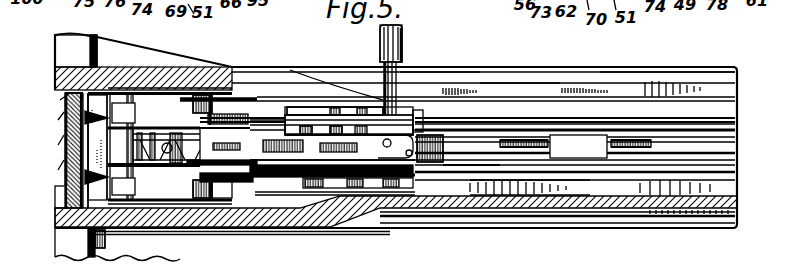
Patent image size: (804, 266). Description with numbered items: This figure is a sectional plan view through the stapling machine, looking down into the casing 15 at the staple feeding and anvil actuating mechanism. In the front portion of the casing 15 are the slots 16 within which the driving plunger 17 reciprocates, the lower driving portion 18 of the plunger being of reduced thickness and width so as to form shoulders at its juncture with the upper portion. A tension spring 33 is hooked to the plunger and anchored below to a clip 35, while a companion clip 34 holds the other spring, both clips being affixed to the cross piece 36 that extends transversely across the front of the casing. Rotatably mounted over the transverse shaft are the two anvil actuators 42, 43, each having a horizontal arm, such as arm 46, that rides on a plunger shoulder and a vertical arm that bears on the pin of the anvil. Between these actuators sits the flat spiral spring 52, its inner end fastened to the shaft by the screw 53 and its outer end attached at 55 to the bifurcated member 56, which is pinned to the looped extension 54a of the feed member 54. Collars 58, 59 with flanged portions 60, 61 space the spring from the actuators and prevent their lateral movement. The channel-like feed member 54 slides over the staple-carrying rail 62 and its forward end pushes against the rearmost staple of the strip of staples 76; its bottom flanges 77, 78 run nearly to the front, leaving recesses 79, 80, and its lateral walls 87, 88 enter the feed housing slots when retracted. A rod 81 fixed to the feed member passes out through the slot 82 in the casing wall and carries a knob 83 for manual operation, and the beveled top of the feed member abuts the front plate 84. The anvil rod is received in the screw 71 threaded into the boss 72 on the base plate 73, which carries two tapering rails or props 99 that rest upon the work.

The casing 15 is at (76, 57).
The slots 16 is at (58, 198).
The driving plunger 17 is at (58, 195).
The bottom or driving portion 18 is at (110, 172).
The tension spring 33 is at (92, 112).
The clip 34 is at (57, 210).
The clip 35 is at (84, 121).
The cross piece 36 is at (90, 146).
The anvil actuator 42 is at (197, 190).
The anvil actuator 43 is at (182, 100).
The arm 46 is at (122, 95).
The flat spiral spring 52 is at (228, 180).
The screw 53 is at (218, 110).
The push or feed member 54 is at (325, 180).
The looped extension 54a is at (440, 175).
The attachment point 55 is at (423, 128).
The member 56 is at (425, 165).
The collar 58 is at (108, 230).
The collar 59 is at (214, 95).
The flanged portion 60 is at (226, 192).
The flanged portion 61 is at (155, 128).
The staple-carrying member or rail 62 is at (721, 117).
The screw 71 is at (628, 132).
The internally threaded boss 72 is at (583, 133).
The base plate 73 is at (584, 187).
The strip of staples 76 is at (300, 110).
The flange 77 is at (338, 178).
The flange 78 is at (325, 110).
The recess 79 is at (262, 192).
The recess 80 is at (297, 113).
The rod 81 is at (398, 75).
The slot 82 is at (512, 92).
The knob 83 is at (403, 42).
The front plate 84 is at (66, 161).
The lateral wall 87 is at (383, 178).
The lateral wall 88 is at (343, 107).
The rails or props 99 is at (609, 80).